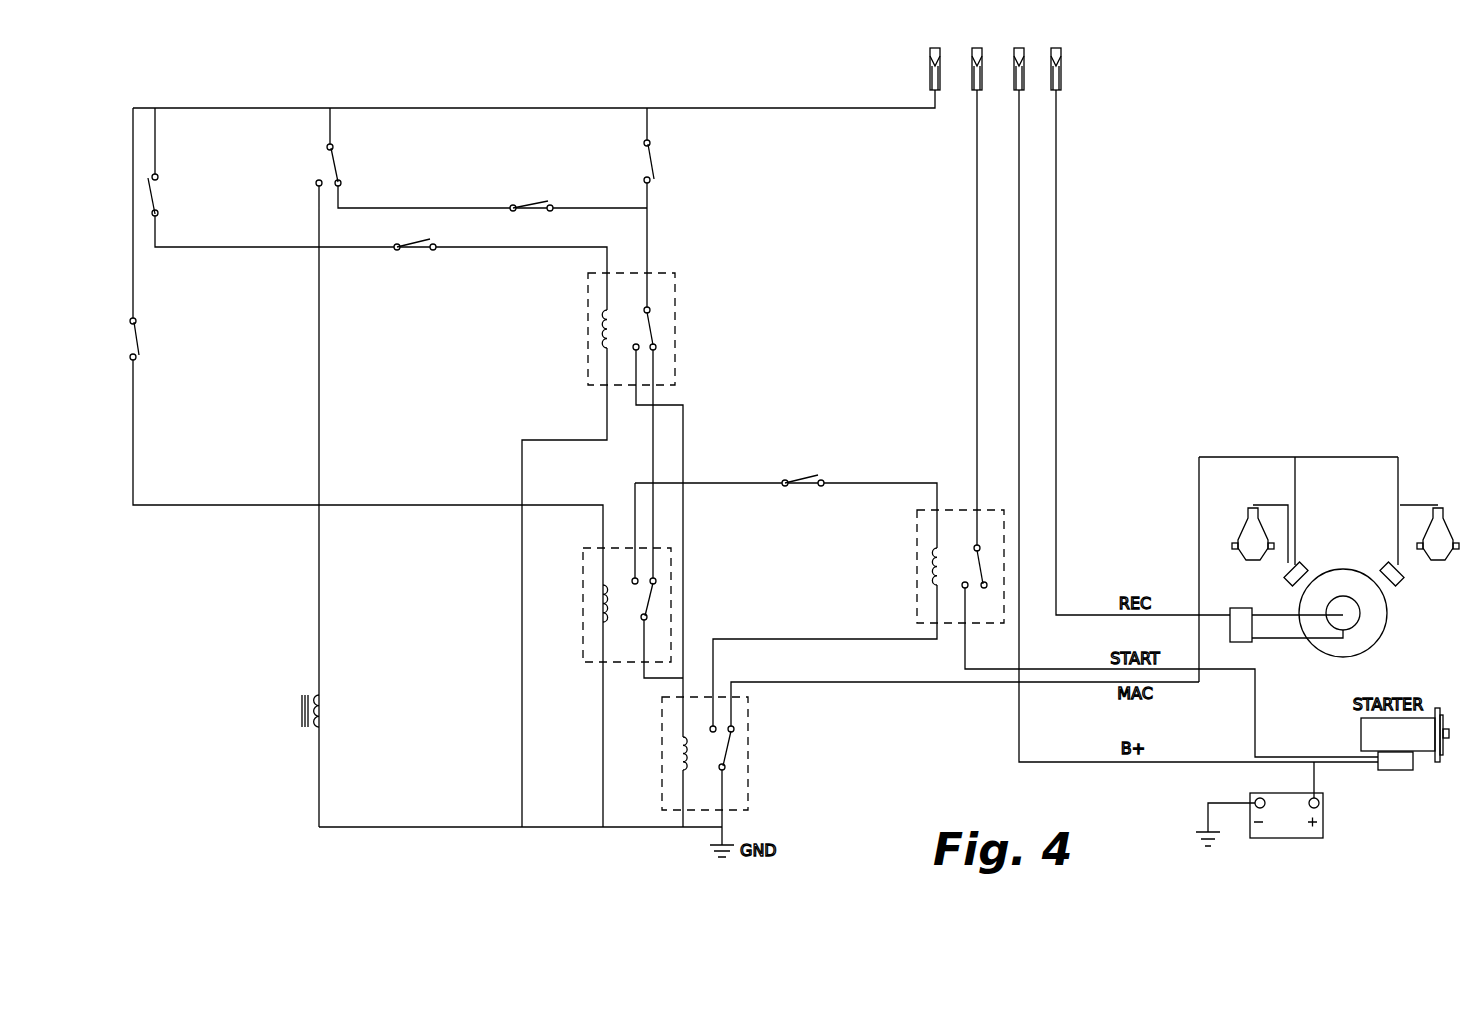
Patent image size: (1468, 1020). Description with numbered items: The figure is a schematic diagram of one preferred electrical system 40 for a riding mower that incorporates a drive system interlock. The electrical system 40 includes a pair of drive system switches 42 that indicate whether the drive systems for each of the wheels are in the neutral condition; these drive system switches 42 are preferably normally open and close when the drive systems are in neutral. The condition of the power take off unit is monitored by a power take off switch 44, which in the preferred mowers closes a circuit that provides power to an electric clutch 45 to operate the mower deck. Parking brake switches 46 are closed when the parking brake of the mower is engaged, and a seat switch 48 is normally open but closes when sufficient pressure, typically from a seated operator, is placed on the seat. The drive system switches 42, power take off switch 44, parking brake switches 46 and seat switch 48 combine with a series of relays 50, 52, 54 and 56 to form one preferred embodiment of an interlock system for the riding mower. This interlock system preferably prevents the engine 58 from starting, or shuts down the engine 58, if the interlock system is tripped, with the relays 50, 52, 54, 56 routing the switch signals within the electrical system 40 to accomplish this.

The electrical system 40 is at (1258, 222).
The drive system switches 42 is at (168, 160).
The power take off switch 44 is at (323, 168).
The electric clutch 45 is at (332, 702).
The parking brake switches 46 is at (153, 328).
The seat switch 48 is at (643, 166).
The relay 50 is at (676, 306).
The relay 52 is at (583, 607).
The relay 54 is at (748, 752).
The relay 56 is at (917, 590).
The engine 58 is at (1345, 448).